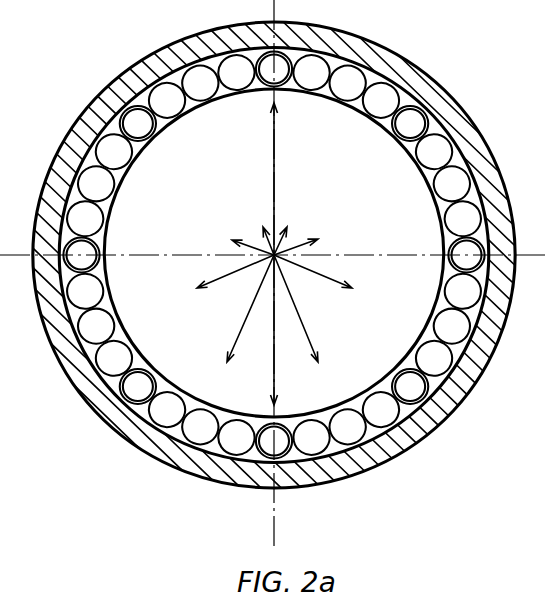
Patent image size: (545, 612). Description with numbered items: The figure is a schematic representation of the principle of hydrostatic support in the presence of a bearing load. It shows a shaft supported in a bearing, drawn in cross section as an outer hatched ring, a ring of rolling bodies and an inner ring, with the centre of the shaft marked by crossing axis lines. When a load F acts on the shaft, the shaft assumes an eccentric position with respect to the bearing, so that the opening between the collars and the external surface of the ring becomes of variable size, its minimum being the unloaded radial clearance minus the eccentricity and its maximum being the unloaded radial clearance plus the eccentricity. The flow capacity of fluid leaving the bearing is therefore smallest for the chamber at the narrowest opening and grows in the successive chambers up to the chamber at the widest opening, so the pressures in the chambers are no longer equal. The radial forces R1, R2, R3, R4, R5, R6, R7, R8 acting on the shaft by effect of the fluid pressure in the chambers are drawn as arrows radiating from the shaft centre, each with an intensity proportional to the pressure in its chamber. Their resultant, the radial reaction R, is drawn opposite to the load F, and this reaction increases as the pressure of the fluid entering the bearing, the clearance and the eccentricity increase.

The load F is at (281, 175).
The radial forces R is at (282, 331).
The radial force R1 is at (310, 311).
The radial force R2 is at (324, 271).
The radial force R3 is at (302, 234).
The radial force R4 is at (287, 229).
The radial force R5 is at (259, 228).
The radial force R6 is at (245, 234).
The radial force R7 is at (227, 271).
The radial force R8 is at (236, 311).